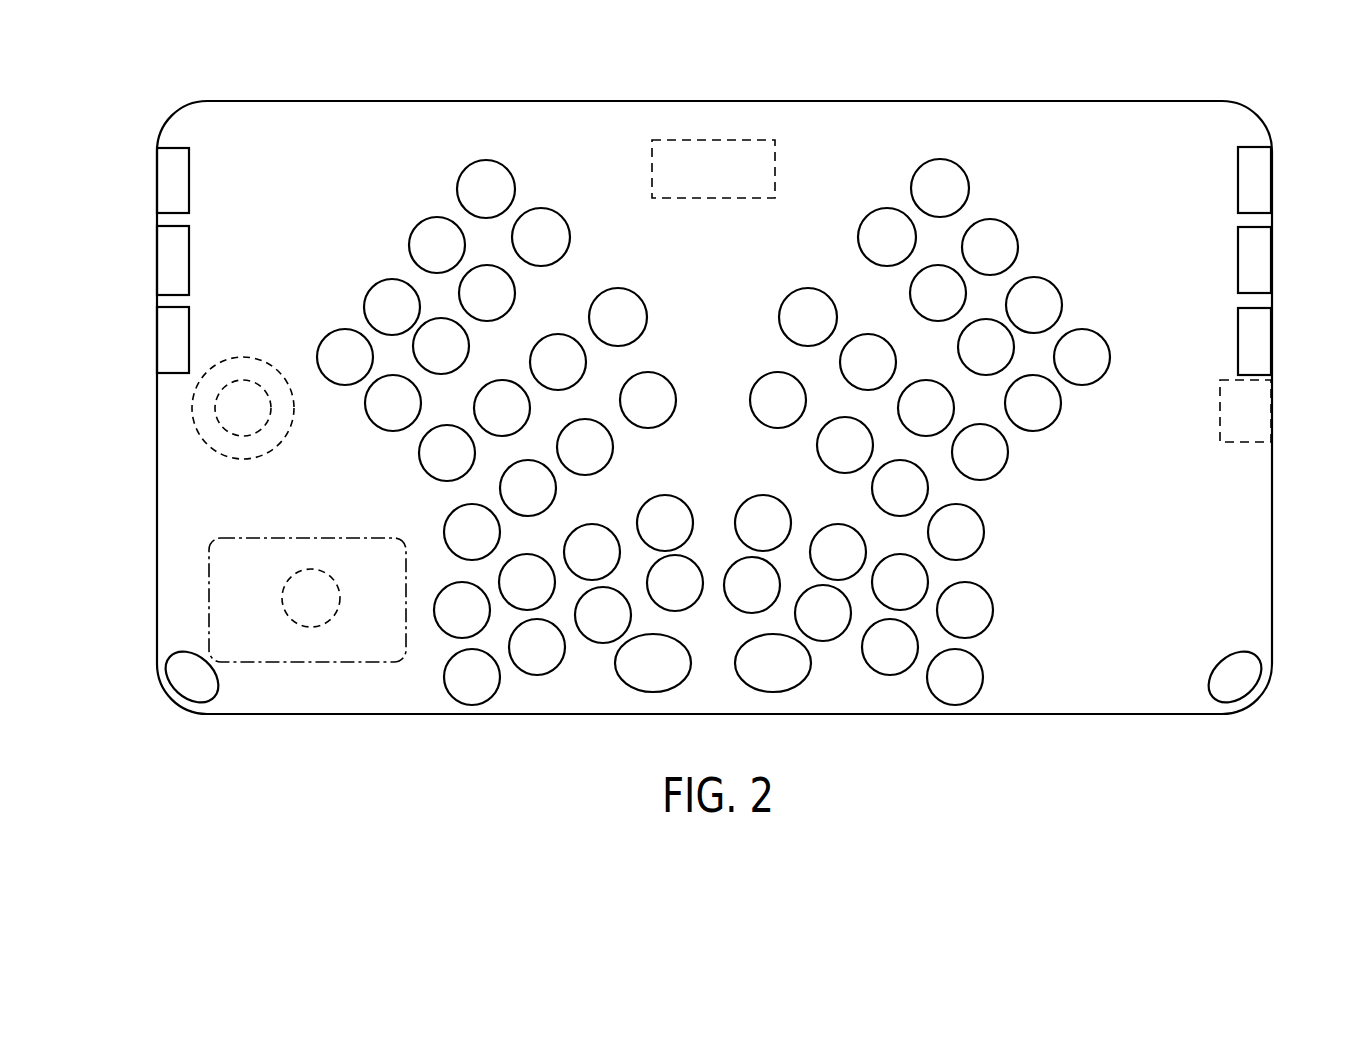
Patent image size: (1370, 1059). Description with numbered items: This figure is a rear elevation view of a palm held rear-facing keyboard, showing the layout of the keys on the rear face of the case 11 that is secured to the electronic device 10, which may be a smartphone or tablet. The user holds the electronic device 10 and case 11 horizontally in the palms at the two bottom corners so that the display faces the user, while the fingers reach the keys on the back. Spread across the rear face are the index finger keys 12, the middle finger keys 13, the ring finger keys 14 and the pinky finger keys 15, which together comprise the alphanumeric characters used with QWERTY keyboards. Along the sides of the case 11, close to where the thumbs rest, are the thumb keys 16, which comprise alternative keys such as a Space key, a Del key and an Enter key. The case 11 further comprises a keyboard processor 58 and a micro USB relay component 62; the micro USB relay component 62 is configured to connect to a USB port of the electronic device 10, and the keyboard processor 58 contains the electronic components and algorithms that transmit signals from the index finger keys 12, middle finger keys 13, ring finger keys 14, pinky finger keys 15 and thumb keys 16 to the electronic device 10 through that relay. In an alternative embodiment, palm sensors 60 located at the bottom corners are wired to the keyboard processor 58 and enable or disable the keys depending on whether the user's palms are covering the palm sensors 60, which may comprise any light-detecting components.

The electronic device 10 is at (595, 92).
The case 11 is at (476, 101).
The index finger keys 12 is at (346, 330).
The middle finger keys 13 is at (782, 274).
The ring finger keys 14 is at (653, 372).
The pinky finger keys 15 is at (763, 494).
The thumb keys 16 is at (156, 178).
The keyboard processor 58 is at (715, 138).
The palm sensors 60 is at (192, 676).
The micro USB relay component 62 is at (1252, 410).